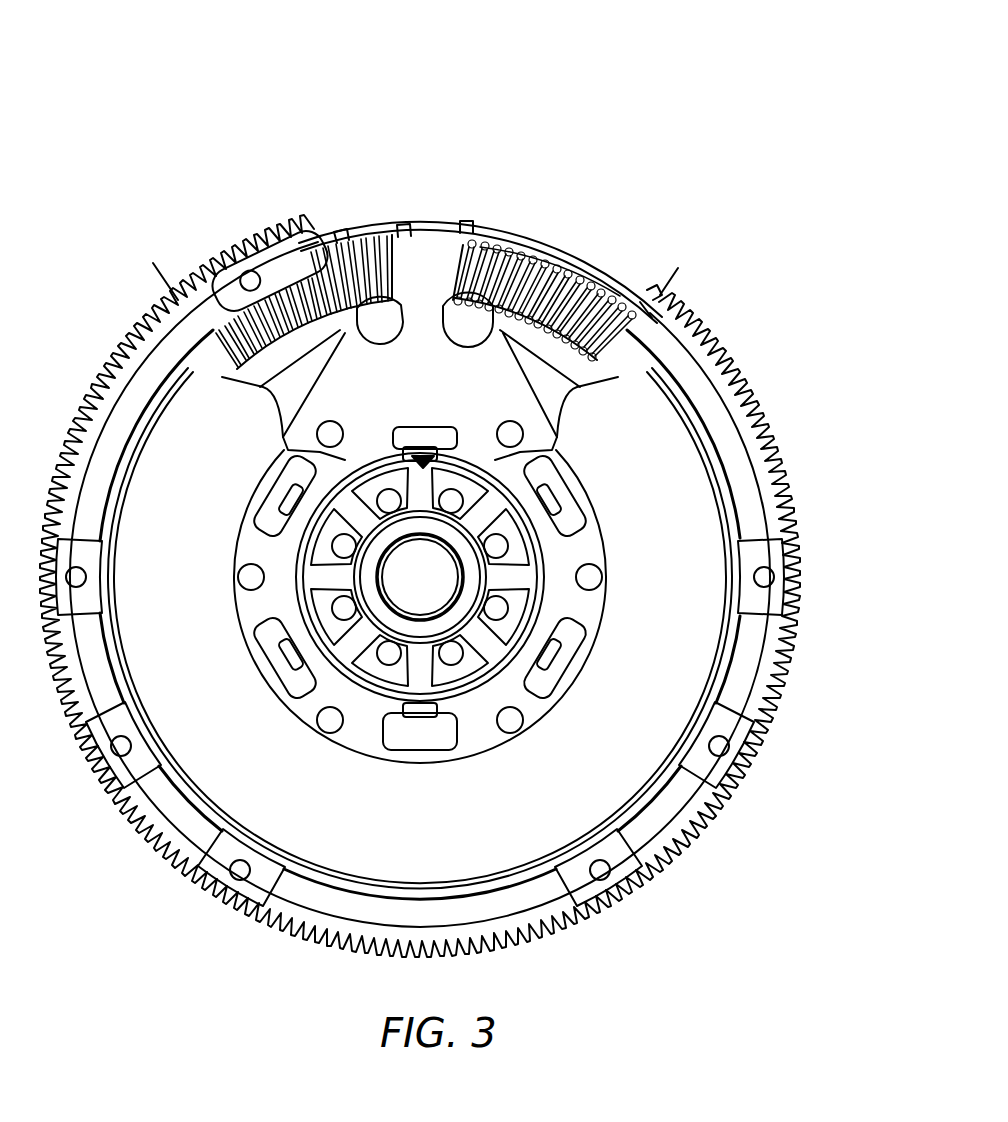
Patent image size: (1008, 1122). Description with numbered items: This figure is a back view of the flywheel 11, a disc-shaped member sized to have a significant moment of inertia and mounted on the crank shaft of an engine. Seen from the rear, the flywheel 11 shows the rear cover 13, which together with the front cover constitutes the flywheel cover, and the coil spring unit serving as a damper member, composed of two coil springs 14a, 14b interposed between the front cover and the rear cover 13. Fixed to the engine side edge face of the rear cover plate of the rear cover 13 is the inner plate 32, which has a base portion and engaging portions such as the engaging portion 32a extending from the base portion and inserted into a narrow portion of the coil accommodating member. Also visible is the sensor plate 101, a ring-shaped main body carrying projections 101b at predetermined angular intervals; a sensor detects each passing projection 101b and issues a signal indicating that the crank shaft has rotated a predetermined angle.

The flywheel 11 is at (573, 113).
The rear cover 13 is at (753, 633).
The coil spring 14a is at (352, 232).
The coil spring 14b is at (568, 262).
The inner plate 32 is at (505, 397).
The engaging portion 32a is at (440, 248).
The sensor plate 101 is at (511, 245).
The projection 101b is at (637, 280).